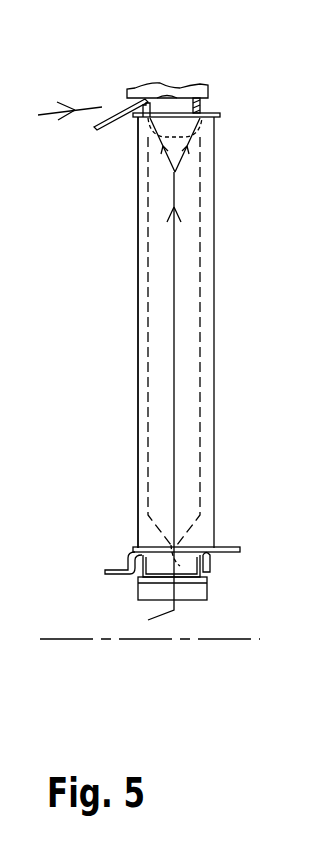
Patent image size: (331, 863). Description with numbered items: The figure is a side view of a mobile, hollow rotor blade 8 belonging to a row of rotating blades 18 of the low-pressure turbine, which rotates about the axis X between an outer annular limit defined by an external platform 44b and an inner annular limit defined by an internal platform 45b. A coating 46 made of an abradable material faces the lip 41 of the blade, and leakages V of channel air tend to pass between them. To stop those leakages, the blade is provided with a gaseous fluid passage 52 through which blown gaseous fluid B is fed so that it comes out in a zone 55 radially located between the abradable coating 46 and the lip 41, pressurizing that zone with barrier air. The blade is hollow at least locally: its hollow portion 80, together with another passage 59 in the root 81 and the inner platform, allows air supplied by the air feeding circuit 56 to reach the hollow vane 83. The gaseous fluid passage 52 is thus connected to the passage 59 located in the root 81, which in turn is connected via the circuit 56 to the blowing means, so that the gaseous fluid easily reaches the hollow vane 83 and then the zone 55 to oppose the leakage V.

The rotor blade 8 is at (223, 212).
The row of rotor blades 18 is at (136, 361).
The abradable coating 46 is at (188, 87).
The leakages of channel air V is at (88, 107).
The lip 41 is at (107, 120).
The gaseous fluid passage 52 is at (203, 108).
The external platform 44b is at (210, 138).
The zone 55 is at (152, 137).
The blown gaseous fluid B is at (176, 305).
The hollow portion 80 is at (160, 430).
The hollow vane 83 is at (207, 360).
The internal platform 45b is at (124, 553).
The root passage 59 is at (178, 566).
The blade root 81 is at (205, 582).
The air feeding circuit 56 is at (96, 609).
The axis X is at (72, 639).